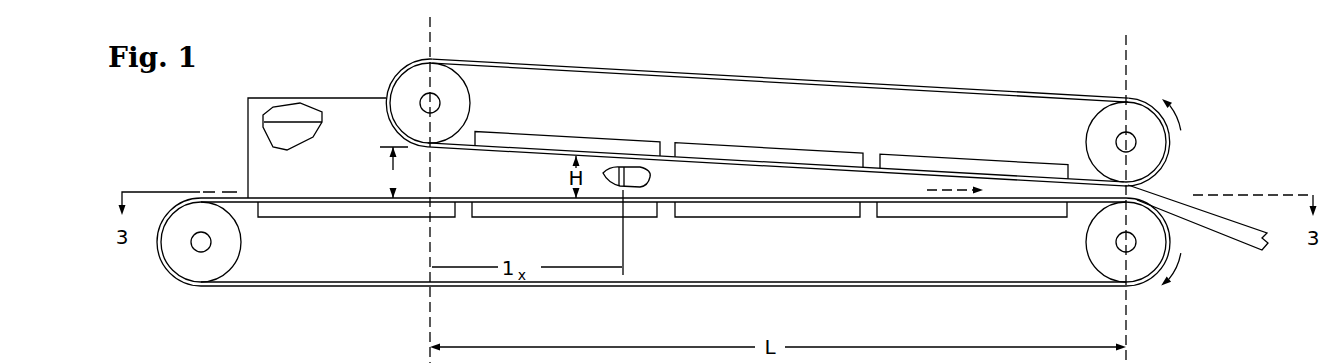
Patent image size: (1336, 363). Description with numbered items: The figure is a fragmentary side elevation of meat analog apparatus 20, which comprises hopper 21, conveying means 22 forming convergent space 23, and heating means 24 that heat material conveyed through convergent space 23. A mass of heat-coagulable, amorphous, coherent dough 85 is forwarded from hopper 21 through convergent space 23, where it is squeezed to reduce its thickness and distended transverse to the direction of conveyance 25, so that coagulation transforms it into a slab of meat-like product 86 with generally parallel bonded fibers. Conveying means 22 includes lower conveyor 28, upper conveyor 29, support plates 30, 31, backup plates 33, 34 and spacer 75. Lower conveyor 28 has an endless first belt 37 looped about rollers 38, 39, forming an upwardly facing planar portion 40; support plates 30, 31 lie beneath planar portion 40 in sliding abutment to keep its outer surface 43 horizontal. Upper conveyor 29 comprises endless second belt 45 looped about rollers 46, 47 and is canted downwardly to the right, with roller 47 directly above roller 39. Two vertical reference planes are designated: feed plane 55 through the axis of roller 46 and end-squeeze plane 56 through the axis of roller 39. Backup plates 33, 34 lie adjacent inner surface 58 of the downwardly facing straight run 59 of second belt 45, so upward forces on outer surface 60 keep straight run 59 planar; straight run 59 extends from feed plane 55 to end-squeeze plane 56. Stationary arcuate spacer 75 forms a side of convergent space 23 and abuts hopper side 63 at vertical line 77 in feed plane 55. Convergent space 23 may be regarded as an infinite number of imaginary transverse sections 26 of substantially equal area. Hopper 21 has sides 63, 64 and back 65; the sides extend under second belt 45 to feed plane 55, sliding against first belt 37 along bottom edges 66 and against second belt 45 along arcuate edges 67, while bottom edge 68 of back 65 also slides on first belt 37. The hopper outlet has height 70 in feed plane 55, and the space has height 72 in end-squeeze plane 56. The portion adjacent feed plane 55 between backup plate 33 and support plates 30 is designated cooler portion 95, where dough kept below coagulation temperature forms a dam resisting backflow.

The meat analog apparatus 20 is at (1190, 77).
The hopper 21 is at (296, 83).
The conveying means 22 is at (787, 63).
The convergent space 23 is at (641, 177).
The heating means 24 is at (592, 143).
The direction of conveyance 25 is at (967, 190).
The transverse section 26 is at (628, 184).
The lower conveyor 28 is at (373, 304).
The upper conveyor 29 is at (662, 62).
The support plate 30 is at (375, 220).
The support plate 31 is at (728, 218).
The backup plate 33 is at (538, 132).
The backup plate 34 is at (722, 143).
The first belt 37 is at (312, 285).
The roller 38 is at (220, 263).
The roller 39 is at (1108, 268).
The planar portion 40 is at (230, 190).
The outer surface 43 is at (492, 198).
The second belt 45 is at (915, 87).
The roller 46 is at (402, 84).
The roller 47 is at (1150, 152).
The feed plane 55 is at (432, 33).
The end-squeeze plane 56 is at (1128, 47).
The inner surface 58 is at (668, 152).
The straight run 59 is at (843, 168).
The outer surface 60 is at (878, 170).
The hopper side 63 is at (314, 184).
The hopper side 64 is at (292, 113).
The back 65 is at (248, 133).
The bottom edge 66 is at (313, 202).
The arcuate edge 67 is at (402, 122).
The bottom edge 68 is at (248, 196).
The height 70 is at (394, 172).
The height 72 is at (1128, 196).
The spacer 75 is at (741, 195).
The vertical line 77 is at (437, 170).
The dough 85 is at (274, 147).
The meat-like product 86 is at (1243, 234).
The cooler portion 95 is at (613, 184).